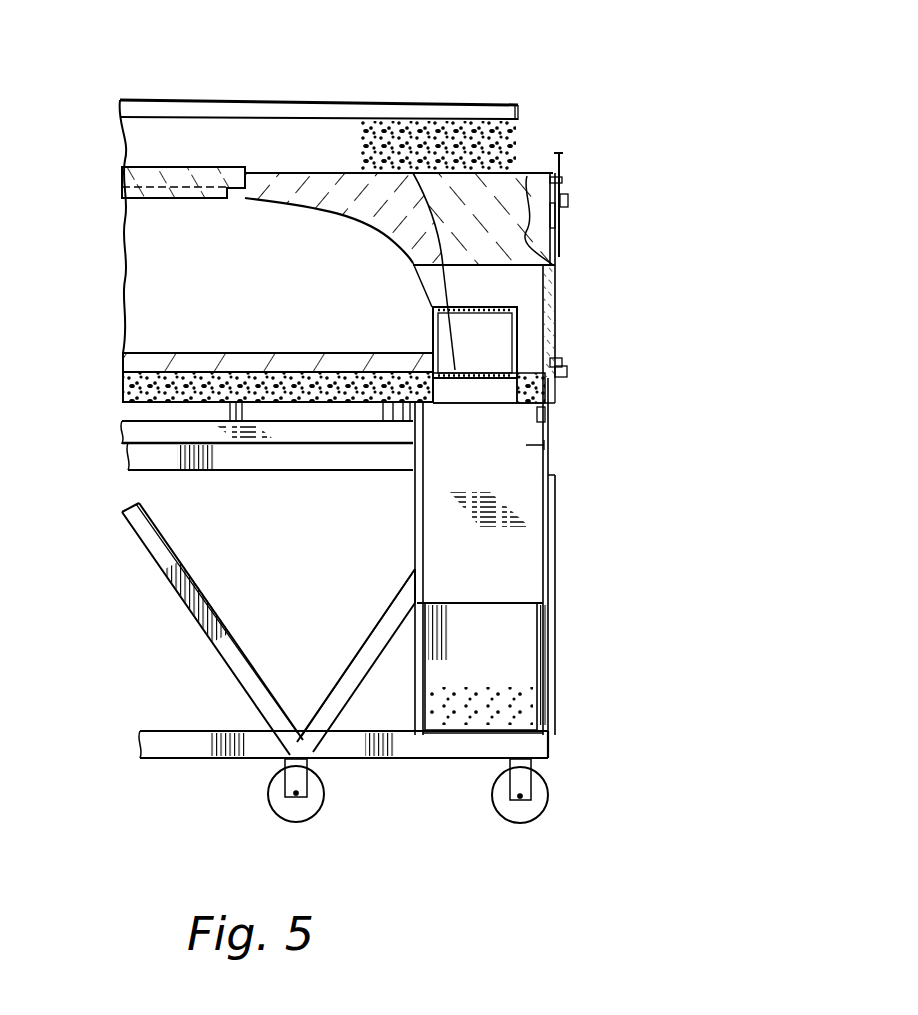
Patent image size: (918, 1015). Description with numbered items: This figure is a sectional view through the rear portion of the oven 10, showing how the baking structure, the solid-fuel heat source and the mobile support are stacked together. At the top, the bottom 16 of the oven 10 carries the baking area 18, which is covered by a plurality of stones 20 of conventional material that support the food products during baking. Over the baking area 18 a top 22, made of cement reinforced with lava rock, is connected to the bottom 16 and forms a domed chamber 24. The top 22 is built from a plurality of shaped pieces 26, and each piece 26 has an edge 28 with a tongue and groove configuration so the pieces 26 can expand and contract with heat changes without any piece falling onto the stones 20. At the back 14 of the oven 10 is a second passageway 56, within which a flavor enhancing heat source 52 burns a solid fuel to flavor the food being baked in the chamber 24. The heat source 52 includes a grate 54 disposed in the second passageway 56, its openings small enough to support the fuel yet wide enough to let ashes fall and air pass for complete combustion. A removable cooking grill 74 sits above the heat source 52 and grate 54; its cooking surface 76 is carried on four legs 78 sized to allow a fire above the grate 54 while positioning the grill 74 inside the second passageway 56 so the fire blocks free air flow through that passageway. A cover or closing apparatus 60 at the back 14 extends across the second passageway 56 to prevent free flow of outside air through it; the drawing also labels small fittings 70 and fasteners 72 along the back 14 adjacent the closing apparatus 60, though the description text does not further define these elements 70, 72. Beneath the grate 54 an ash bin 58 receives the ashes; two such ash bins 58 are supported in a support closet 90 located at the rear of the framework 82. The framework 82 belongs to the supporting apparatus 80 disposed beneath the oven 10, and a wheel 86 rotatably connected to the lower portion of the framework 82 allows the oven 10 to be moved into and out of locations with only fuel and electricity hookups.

The oven 10 is at (493, 92).
The back 14 is at (566, 143).
The bottom 16 is at (125, 380).
The baking area 18 is at (288, 353).
The stones 20 is at (125, 357).
The top 22 is at (523, 175).
The domed chamber 24 is at (182, 226).
The pieces 26 is at (143, 165).
The edge 28 is at (251, 178).
The flavor enhancing heat source 52 is at (475, 381).
The grate 54 is at (490, 382).
The second passageway 56 is at (556, 283).
The ash bin 58 is at (430, 668).
The closing apparatus 60 is at (557, 320).
The mounting bracket 70 is at (557, 178).
The fastener 72 is at (566, 200).
The removable cooking grill 74 is at (432, 305).
The cooking surface 76 is at (474, 307).
The legs 78 is at (511, 350).
The supporting apparatus 80 is at (127, 458).
The framework 82 is at (373, 636).
The wheel 86 is at (320, 800).
The support closet 90 is at (415, 518).